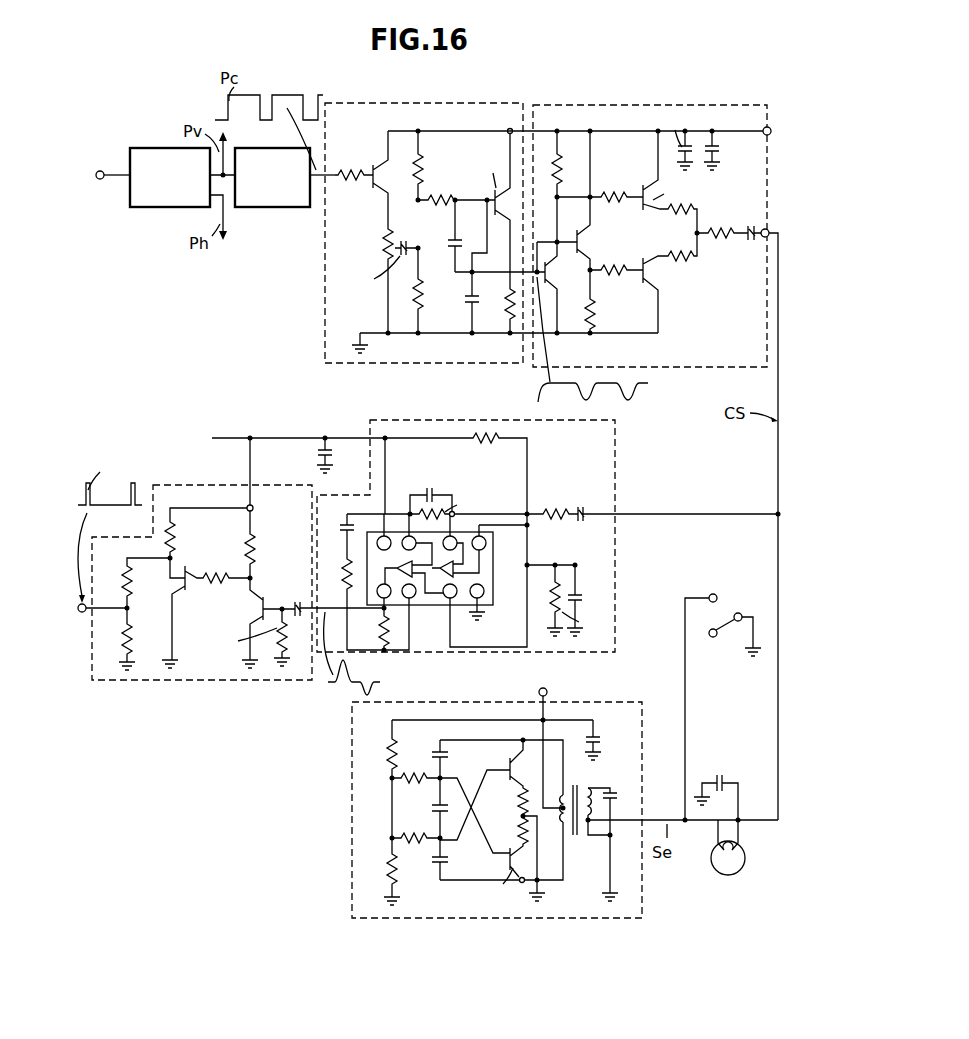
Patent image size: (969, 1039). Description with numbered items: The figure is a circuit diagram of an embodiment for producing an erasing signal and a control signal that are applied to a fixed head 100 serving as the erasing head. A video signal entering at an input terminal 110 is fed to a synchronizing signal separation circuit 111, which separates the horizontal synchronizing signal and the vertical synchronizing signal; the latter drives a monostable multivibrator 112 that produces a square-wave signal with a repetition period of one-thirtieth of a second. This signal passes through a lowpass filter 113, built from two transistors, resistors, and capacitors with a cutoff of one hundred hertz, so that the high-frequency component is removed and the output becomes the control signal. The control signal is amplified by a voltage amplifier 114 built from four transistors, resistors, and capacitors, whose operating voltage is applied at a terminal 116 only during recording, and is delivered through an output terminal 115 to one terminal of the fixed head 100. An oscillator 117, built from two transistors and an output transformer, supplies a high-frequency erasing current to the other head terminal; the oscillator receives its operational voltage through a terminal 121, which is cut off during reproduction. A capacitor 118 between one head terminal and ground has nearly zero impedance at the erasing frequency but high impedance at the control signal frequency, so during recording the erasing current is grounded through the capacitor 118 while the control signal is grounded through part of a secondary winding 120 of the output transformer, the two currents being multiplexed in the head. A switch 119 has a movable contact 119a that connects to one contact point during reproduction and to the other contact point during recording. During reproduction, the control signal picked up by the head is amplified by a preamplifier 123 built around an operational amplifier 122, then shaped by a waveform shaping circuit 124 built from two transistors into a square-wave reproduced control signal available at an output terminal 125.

The fixed head 100 is at (715, 865).
The input terminal 110 is at (101, 171).
The synchronizing signal separation circuit 111 is at (152, 148).
The monostable multivibrator 112 is at (264, 148).
The lowpass filter 113 is at (394, 102).
The voltage amplifier 114 is at (591, 104).
The output terminal 115 is at (767, 229).
The terminal 116 is at (771, 129).
The oscillator 117 is at (350, 792).
The capacitor 118 is at (716, 778).
The switch 119 is at (720, 591).
The movable contact 119a is at (726, 612).
The secondary winding 120 is at (576, 838).
The terminal 121 is at (547, 691).
The operational amplifier 122 is at (493, 557).
The preamplifier 123 is at (407, 418).
The waveform shaping circuit 124 is at (131, 682).
The output terminal 125 is at (70, 626).